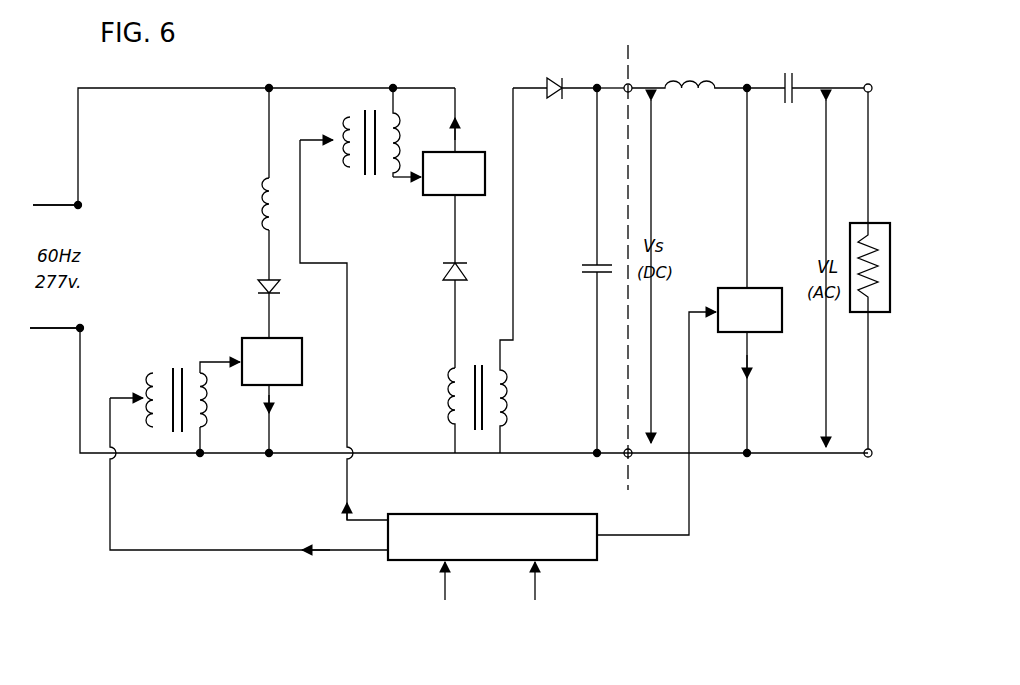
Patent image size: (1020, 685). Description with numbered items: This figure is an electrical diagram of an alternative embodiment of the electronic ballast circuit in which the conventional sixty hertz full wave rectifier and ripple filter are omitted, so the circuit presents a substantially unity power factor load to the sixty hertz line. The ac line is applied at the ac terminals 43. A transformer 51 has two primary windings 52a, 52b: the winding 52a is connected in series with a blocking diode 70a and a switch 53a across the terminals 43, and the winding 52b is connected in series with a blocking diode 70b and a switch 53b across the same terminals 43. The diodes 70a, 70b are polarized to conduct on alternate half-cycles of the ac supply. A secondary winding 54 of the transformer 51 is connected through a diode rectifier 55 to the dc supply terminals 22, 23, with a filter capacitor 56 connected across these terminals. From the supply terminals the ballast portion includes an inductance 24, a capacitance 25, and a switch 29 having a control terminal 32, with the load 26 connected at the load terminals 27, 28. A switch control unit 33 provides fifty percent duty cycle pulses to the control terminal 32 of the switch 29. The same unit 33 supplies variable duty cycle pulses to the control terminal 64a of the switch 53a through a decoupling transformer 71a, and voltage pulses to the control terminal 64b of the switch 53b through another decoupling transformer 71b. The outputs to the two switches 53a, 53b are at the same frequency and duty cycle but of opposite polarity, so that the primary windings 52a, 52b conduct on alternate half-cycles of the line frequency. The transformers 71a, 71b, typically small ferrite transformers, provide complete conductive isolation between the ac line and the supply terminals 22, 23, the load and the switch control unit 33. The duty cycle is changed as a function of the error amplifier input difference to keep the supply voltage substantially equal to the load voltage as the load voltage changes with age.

The supply terminal 22 is at (632, 85).
The supply terminal 23 is at (632, 458).
The inductance 24 is at (700, 98).
The capacitance 25 is at (799, 80).
The load 26 is at (890, 222).
The load terminal 27 is at (873, 87).
The load terminal 28 is at (862, 462).
The switch 29 is at (768, 288).
The control terminal 32 is at (690, 383).
The switch control unit 33 is at (508, 513).
The ac terminals 43 is at (80, 204).
The transformer 51 is at (473, 354).
The primary winding 52a is at (448, 388).
The primary winding 52b is at (262, 207).
The switch 53a is at (433, 197).
The switch 53b is at (302, 340).
The secondary winding 54 is at (506, 392).
The diode rectifier 55 is at (558, 80).
The filter capacitor 56 is at (590, 276).
The control terminal 64a is at (406, 178).
The control terminal 64b is at (218, 346).
The blocking diode 70a is at (444, 268).
The blocking diode 70b is at (258, 290).
The decoupling transformer 71a is at (353, 102).
The decoupling transformer 71b is at (171, 354).